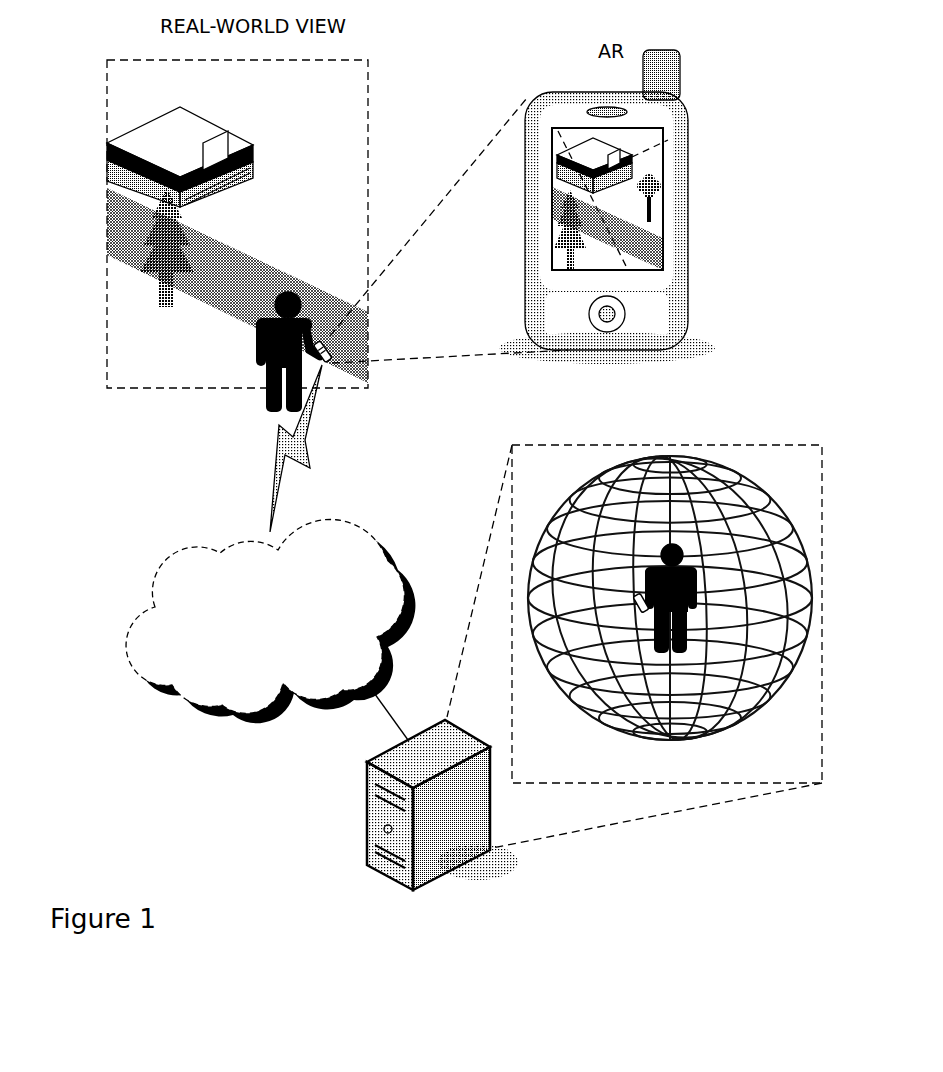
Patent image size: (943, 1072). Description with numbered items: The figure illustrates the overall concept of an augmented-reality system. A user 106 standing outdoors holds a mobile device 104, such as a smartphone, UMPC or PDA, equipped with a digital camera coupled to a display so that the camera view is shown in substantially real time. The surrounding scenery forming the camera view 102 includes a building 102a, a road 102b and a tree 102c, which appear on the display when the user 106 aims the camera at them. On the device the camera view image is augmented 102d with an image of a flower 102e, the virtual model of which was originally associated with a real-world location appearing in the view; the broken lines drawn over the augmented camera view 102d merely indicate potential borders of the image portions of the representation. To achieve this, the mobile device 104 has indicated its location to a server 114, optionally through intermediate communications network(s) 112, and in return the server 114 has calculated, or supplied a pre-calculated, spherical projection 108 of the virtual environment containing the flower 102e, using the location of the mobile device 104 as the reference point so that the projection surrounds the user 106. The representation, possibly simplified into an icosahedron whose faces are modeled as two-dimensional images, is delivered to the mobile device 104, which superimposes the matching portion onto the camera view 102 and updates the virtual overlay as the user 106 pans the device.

The camera view 102 is at (237, 211).
The building 102a is at (143, 140).
The road 102b is at (118, 215).
The tree 102c is at (105, 270).
The augmented camera view 102d is at (648, 160).
The flower 102e is at (653, 197).
The mobile device 104 is at (527, 98).
The user 106 is at (270, 388).
The spherical projection 108 is at (667, 599).
The communications network(s) 112 is at (346, 525).
The server 114 is at (365, 800).